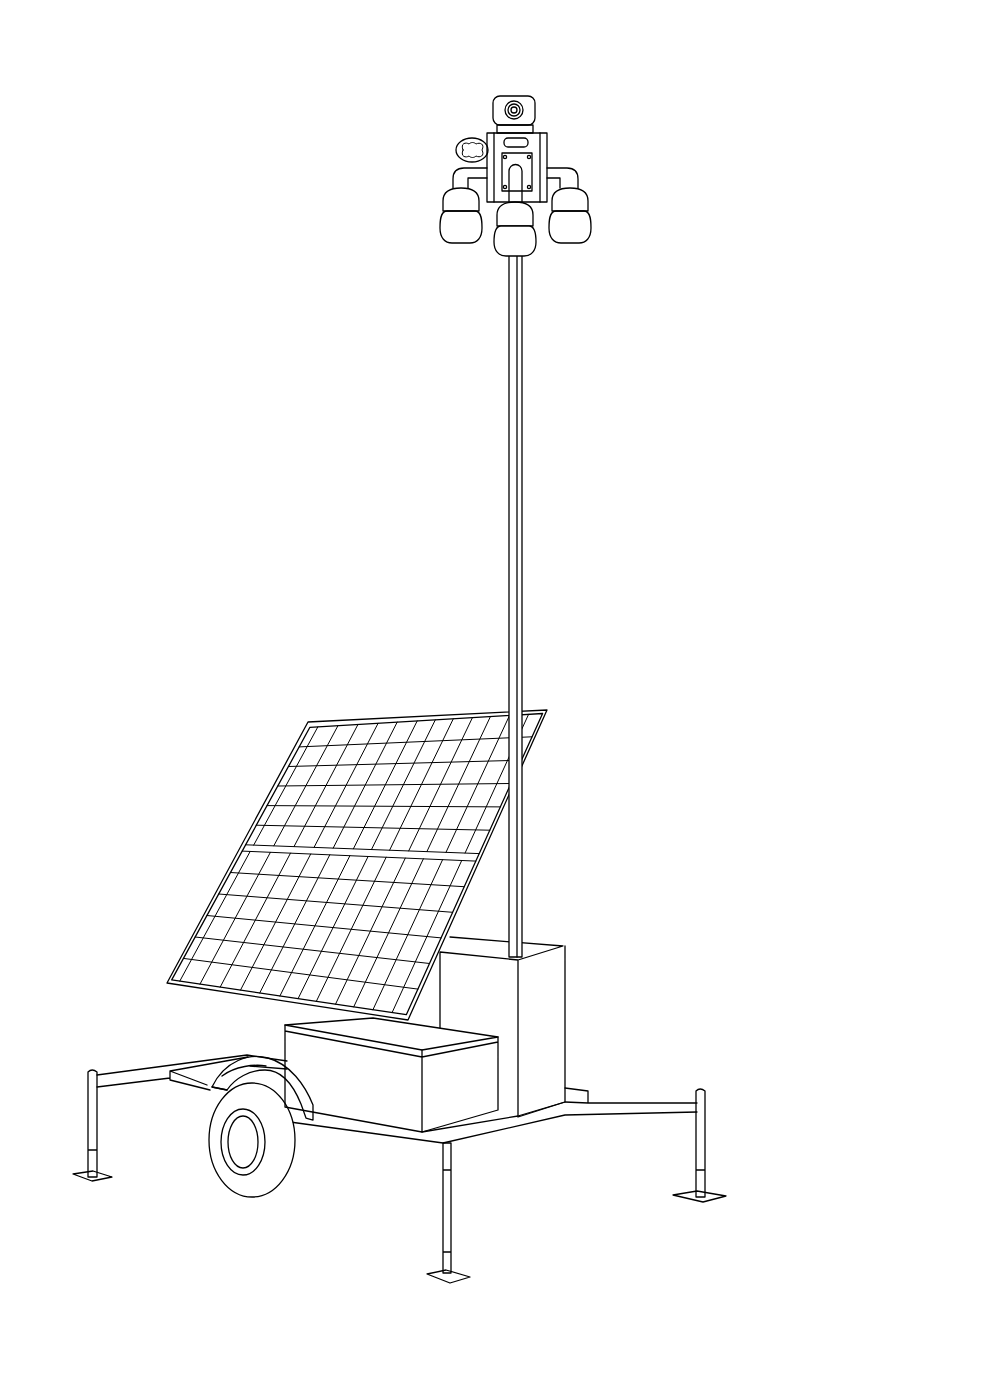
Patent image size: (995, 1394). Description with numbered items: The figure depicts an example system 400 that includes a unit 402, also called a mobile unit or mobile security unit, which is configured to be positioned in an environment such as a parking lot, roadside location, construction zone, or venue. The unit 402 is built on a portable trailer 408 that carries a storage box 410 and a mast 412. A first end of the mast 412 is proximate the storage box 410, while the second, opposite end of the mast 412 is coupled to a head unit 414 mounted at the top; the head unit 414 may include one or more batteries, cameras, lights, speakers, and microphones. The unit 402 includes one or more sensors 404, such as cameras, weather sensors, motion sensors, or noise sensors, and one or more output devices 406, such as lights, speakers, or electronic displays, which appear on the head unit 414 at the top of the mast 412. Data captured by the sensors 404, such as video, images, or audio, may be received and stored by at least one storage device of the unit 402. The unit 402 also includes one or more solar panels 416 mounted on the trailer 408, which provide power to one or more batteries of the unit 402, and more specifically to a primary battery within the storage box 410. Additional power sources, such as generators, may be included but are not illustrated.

The system 400 is at (672, 40).
The unit 402 is at (313, 278).
The sensors 404 is at (593, 242).
The output devices 406 is at (456, 150).
The portable trailer 408 is at (480, 1137).
The storage box 410 is at (388, 1095).
The mast 412 is at (522, 510).
The head unit 414 is at (518, 152).
The solar panels 416 is at (203, 917).